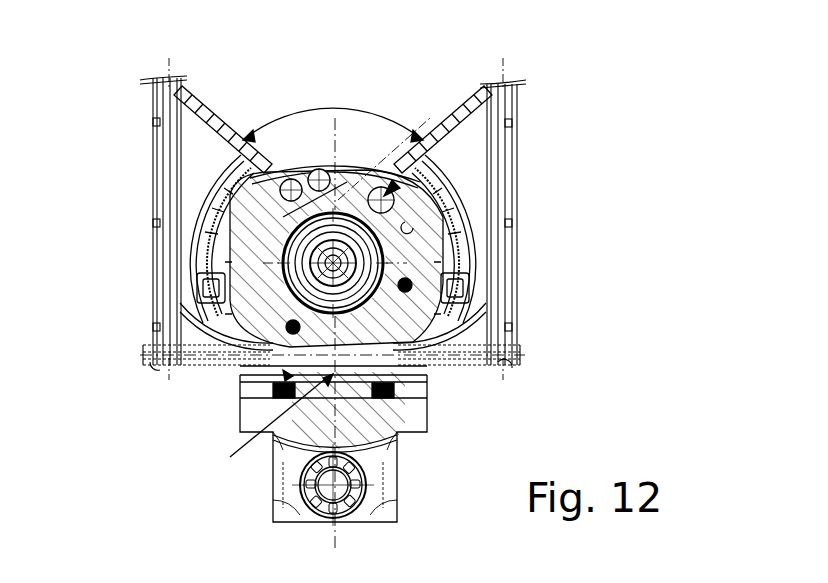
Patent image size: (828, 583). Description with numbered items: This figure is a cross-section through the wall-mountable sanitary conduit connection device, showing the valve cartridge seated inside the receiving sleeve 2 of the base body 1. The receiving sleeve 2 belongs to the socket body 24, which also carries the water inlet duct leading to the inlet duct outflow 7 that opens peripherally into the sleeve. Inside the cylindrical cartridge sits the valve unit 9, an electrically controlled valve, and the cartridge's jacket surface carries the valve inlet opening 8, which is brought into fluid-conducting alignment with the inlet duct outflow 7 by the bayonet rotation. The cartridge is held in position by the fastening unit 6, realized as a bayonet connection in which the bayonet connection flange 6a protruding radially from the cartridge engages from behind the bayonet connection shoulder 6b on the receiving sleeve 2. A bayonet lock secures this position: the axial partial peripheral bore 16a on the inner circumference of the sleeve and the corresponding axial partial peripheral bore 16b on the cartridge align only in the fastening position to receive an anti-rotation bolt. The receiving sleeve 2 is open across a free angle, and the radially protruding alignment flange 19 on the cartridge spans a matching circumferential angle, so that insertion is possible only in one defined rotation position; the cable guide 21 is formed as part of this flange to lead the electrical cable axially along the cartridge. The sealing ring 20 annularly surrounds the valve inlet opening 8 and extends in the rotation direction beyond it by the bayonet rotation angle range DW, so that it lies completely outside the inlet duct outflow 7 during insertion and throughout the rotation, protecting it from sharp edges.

The base body 1 is at (517, 308).
The receiving sleeve 2 is at (407, 322).
The fastening unit 6 is at (397, 187).
The bayonet connection flange 6a is at (379, 187).
The bayonet connection shoulder 6b is at (423, 183).
The inlet duct outflow 7 is at (350, 365).
The valve inlet opening 8 is at (403, 340).
The valve unit 9 is at (325, 255).
The axial partial peripheral bore 16a is at (430, 231).
The axial partial peripheral bore 16b is at (357, 198).
The alignment flange 19 is at (337, 173).
The sealing ring 20 is at (290, 330).
The cable guide 21 is at (268, 170).
The socket body 24 is at (460, 267).
The bayonet rotation angle range DW is at (254, 426).